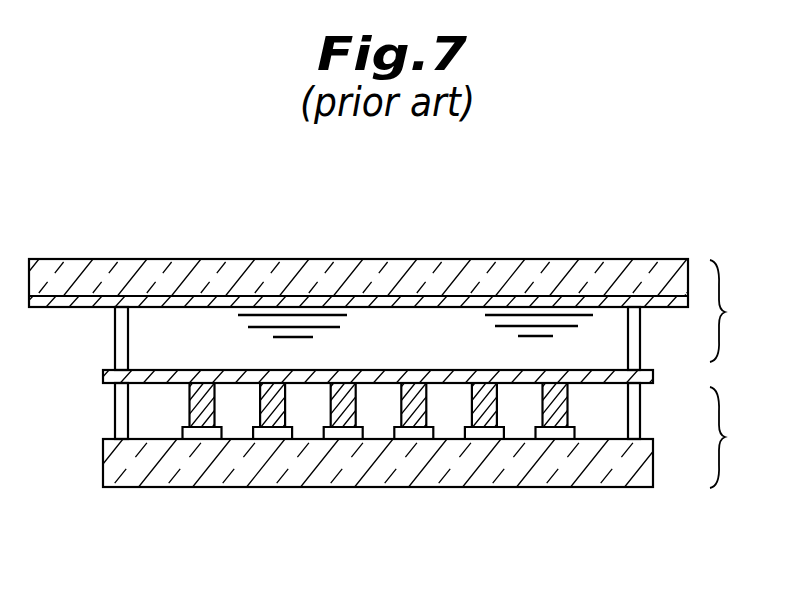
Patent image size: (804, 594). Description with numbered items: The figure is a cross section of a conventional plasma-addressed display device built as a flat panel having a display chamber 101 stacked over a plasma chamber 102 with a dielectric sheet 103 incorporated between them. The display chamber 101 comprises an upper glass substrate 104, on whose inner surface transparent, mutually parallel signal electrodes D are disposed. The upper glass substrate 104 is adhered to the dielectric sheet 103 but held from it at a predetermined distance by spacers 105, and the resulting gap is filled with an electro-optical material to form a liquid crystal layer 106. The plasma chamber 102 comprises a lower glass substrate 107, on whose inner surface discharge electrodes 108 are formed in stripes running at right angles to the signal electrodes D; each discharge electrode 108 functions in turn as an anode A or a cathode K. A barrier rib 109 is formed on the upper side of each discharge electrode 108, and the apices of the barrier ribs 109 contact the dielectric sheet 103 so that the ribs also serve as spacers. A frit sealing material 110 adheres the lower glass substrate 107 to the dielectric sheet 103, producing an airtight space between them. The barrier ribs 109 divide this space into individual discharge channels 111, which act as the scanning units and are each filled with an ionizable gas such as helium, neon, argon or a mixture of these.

The display chamber 101 is at (736, 311).
The plasma chamber 102 is at (742, 437).
The dielectric sheet 103 is at (435, 378).
The upper glass substrate 104 is at (487, 272).
The spacer 105 is at (640, 340).
The liquid crystal layer 106 is at (208, 328).
The lower glass substrate 107 is at (363, 487).
The discharge electrode 108 is at (558, 435).
The barrier rib 109 is at (472, 403).
The frit sealing material 110 is at (120, 415).
The discharge channel 111 is at (240, 410).
The anode A is at (197, 437).
The cathode K is at (272, 440).
The signal electrode D is at (44, 362).